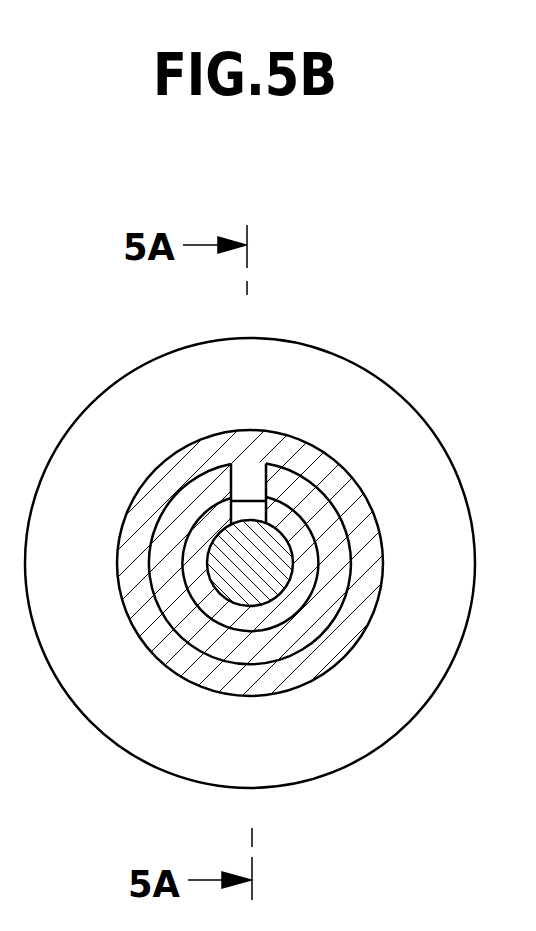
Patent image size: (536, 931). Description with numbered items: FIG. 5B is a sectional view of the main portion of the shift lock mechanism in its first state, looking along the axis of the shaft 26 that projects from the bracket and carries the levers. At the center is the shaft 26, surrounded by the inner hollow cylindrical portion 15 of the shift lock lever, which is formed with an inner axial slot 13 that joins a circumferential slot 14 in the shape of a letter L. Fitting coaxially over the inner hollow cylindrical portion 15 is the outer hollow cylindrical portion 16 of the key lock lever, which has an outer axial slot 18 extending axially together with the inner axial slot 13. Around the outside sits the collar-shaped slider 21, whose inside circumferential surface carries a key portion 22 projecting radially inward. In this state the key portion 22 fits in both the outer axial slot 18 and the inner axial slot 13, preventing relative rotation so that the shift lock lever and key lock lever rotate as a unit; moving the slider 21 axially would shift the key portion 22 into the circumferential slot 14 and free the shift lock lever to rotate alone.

The inner axial slot 13 is at (243, 510).
The circumferential slot 14 is at (292, 518).
The inner hollow cylindrical portion 15 is at (350, 590).
The outer hollow cylindrical portion 16 is at (322, 590).
The outer axial slot 18 is at (266, 463).
The slider 21 is at (330, 352).
The key portion 22 is at (267, 463).
The shaft 26 is at (265, 612).